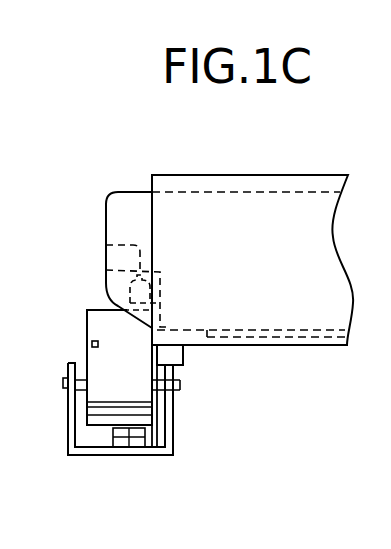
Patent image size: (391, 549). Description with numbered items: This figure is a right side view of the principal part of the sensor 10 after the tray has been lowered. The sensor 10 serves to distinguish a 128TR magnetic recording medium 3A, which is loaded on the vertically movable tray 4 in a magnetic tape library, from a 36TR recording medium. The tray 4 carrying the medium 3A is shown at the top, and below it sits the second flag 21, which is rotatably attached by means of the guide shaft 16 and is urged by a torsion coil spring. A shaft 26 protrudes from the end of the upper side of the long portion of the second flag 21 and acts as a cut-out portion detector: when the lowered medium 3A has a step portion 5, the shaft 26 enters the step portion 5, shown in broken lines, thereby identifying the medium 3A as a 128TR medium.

The vertically movable tray 4 is at (290, 175).
The 128TR magnetic recording medium 3A is at (128, 192).
The shaft 26 is at (106, 245).
The step portion 5 is at (106, 270).
The second flag 21 is at (87, 322).
The guide shaft 16 is at (63, 383).
The sensor 10 is at (71, 460).